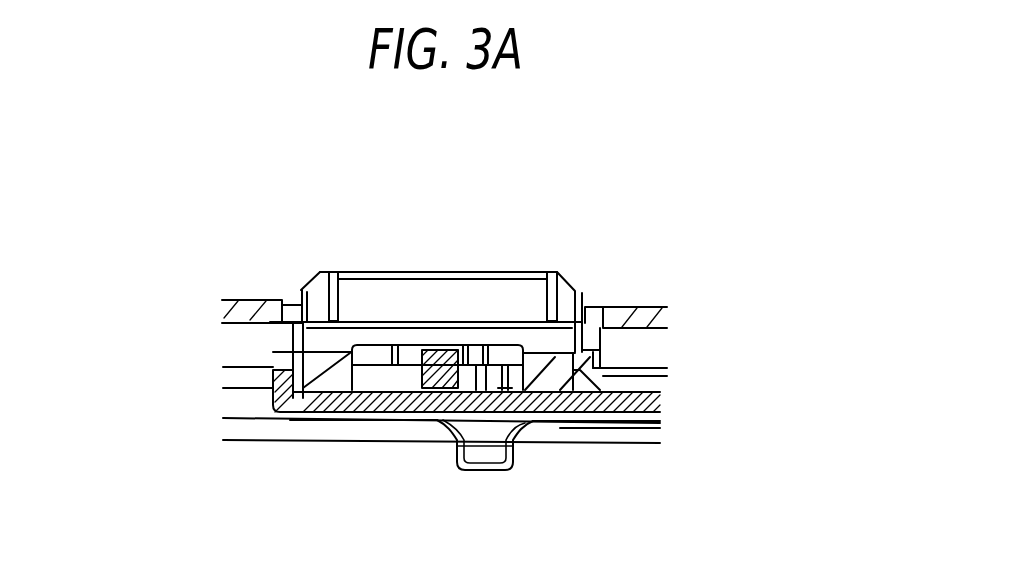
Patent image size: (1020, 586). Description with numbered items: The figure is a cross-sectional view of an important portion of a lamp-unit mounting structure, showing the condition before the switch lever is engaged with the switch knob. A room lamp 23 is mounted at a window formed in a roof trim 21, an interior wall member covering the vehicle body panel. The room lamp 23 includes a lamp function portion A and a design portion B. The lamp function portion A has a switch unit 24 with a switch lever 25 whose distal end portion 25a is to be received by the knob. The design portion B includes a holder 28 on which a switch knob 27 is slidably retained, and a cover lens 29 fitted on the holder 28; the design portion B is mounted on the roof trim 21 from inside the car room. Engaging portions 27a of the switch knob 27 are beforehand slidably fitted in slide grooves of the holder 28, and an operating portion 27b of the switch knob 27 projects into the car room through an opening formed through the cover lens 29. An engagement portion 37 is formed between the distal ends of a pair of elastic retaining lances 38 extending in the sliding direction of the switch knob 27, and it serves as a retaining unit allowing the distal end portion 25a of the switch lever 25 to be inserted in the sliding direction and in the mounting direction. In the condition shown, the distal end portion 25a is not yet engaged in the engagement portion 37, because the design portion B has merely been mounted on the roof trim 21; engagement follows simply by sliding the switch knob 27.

The roof trim 21 is at (632, 300).
The room lamp 23 is at (302, 268).
The switch unit 24 is at (356, 332).
The switch lever 25 is at (383, 420).
The distal end portion 25a is at (433, 421).
The switch knob 27 is at (291, 419).
The engaging portions 27a is at (272, 383).
The operating portion 27b is at (483, 468).
The holder 28 is at (611, 365).
The cover lens 29 is at (612, 448).
The engagement portion 37 is at (482, 378).
The elastic retaining lances 38 is at (442, 350).
The lamp function portion A is at (374, 268).
The design portion B is at (735, 352).